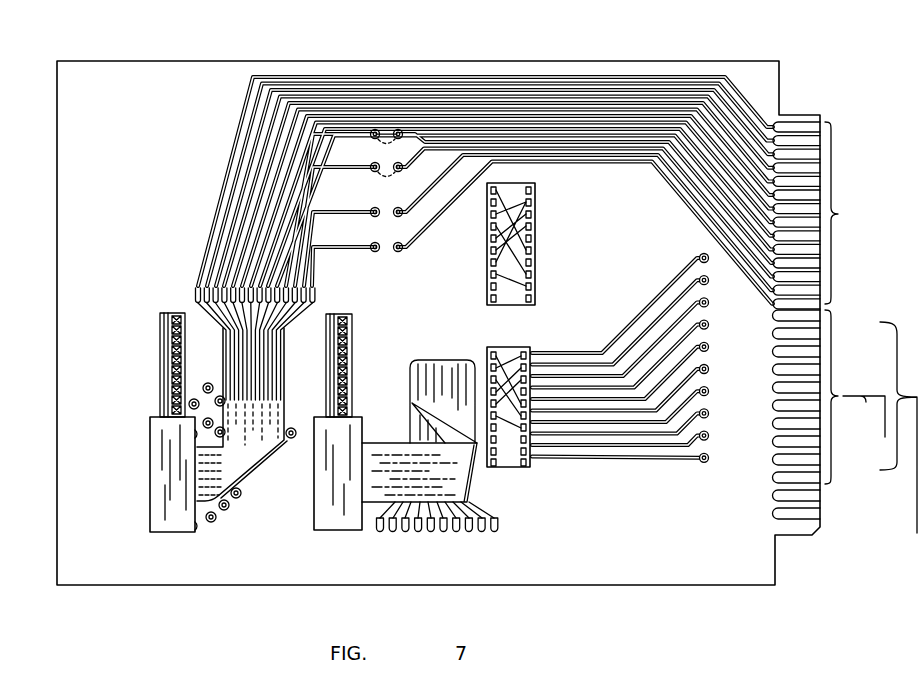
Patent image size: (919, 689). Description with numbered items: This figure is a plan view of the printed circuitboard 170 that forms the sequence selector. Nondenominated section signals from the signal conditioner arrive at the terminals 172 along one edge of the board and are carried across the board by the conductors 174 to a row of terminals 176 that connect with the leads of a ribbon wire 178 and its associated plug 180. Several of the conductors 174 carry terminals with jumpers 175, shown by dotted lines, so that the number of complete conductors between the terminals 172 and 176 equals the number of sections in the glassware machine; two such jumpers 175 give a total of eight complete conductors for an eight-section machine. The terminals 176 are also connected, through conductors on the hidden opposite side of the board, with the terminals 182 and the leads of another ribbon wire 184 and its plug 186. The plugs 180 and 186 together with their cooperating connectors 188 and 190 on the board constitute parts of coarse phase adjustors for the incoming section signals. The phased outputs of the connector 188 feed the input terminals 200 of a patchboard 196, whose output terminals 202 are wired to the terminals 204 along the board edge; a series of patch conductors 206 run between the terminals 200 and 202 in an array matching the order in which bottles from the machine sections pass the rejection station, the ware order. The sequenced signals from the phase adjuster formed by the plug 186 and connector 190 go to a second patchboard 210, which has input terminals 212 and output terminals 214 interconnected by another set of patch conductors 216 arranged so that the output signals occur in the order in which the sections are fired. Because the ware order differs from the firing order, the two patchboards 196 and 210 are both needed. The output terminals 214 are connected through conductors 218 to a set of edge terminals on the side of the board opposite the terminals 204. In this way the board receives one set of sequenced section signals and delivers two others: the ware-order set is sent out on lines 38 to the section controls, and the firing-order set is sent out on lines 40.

The circuitboard 170 is at (773, 80).
The terminals 172 is at (838, 176).
The conductors 174 is at (586, 76).
The jumpers 175 is at (381, 180).
The terminals 176 is at (194, 296).
The ribbon wire 178 is at (284, 400).
The plug 180 is at (150, 503).
The terminals 182 is at (498, 527).
The ribbon wire 184 is at (470, 362).
The plug 186 is at (382, 405).
The connector 188 is at (165, 392).
The connector 190 is at (352, 362).
The patchboard 196 is at (531, 287).
The input terminals 200 is at (491, 287).
The output terminals 202 is at (515, 235).
The terminals 204 is at (832, 376).
The patch conductors 206 is at (508, 190).
The patchboard 210 is at (531, 406).
The input terminals 212 is at (492, 472).
The output terminals 214 is at (534, 471).
The patch conductors 216 is at (508, 353).
The conductors 218 is at (612, 466).
The lines 38 is at (917, 504).
The lines 40 is at (864, 416).